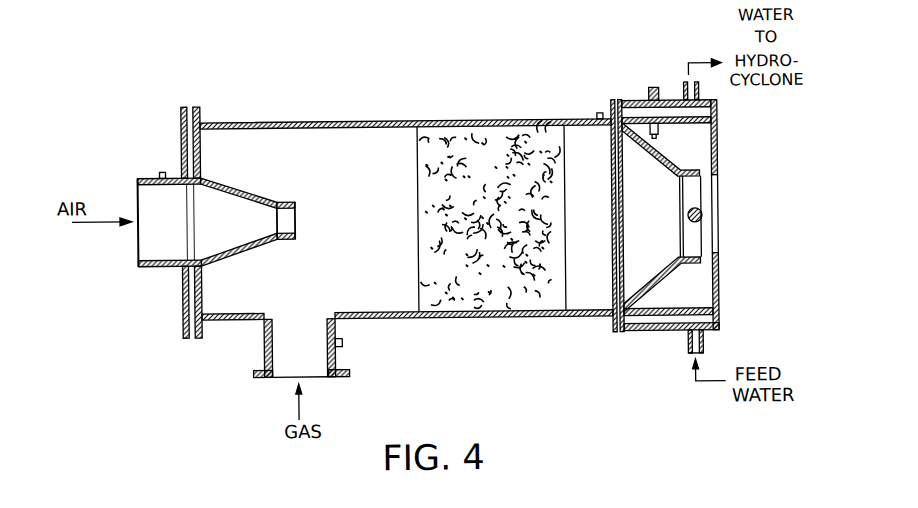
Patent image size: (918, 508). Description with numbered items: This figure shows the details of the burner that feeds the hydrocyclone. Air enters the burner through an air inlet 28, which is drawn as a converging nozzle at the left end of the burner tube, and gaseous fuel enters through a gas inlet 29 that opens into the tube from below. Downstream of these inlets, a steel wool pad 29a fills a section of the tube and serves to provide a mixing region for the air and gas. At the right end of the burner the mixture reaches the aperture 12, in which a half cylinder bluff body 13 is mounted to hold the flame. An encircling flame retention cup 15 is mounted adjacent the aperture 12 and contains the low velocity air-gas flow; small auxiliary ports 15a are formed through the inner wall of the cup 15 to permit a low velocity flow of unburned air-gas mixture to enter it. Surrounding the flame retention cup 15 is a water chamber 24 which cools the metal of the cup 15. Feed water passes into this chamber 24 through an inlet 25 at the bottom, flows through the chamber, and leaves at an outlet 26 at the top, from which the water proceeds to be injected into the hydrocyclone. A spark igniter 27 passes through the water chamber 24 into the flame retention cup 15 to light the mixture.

The aperture 12 is at (718, 200).
The half cylinder bluff body 13 is at (703, 219).
The flame retention cup 15 is at (667, 217).
The auxiliary ports 15a is at (655, 297).
The water chamber 24 is at (645, 321).
The inlet 25 is at (705, 346).
The outlet 26 is at (685, 91).
The spark igniter 27 is at (652, 92).
The air inlet 28 is at (227, 256).
The gas inlet 29 is at (263, 344).
The steel wool pad 29a is at (470, 163).